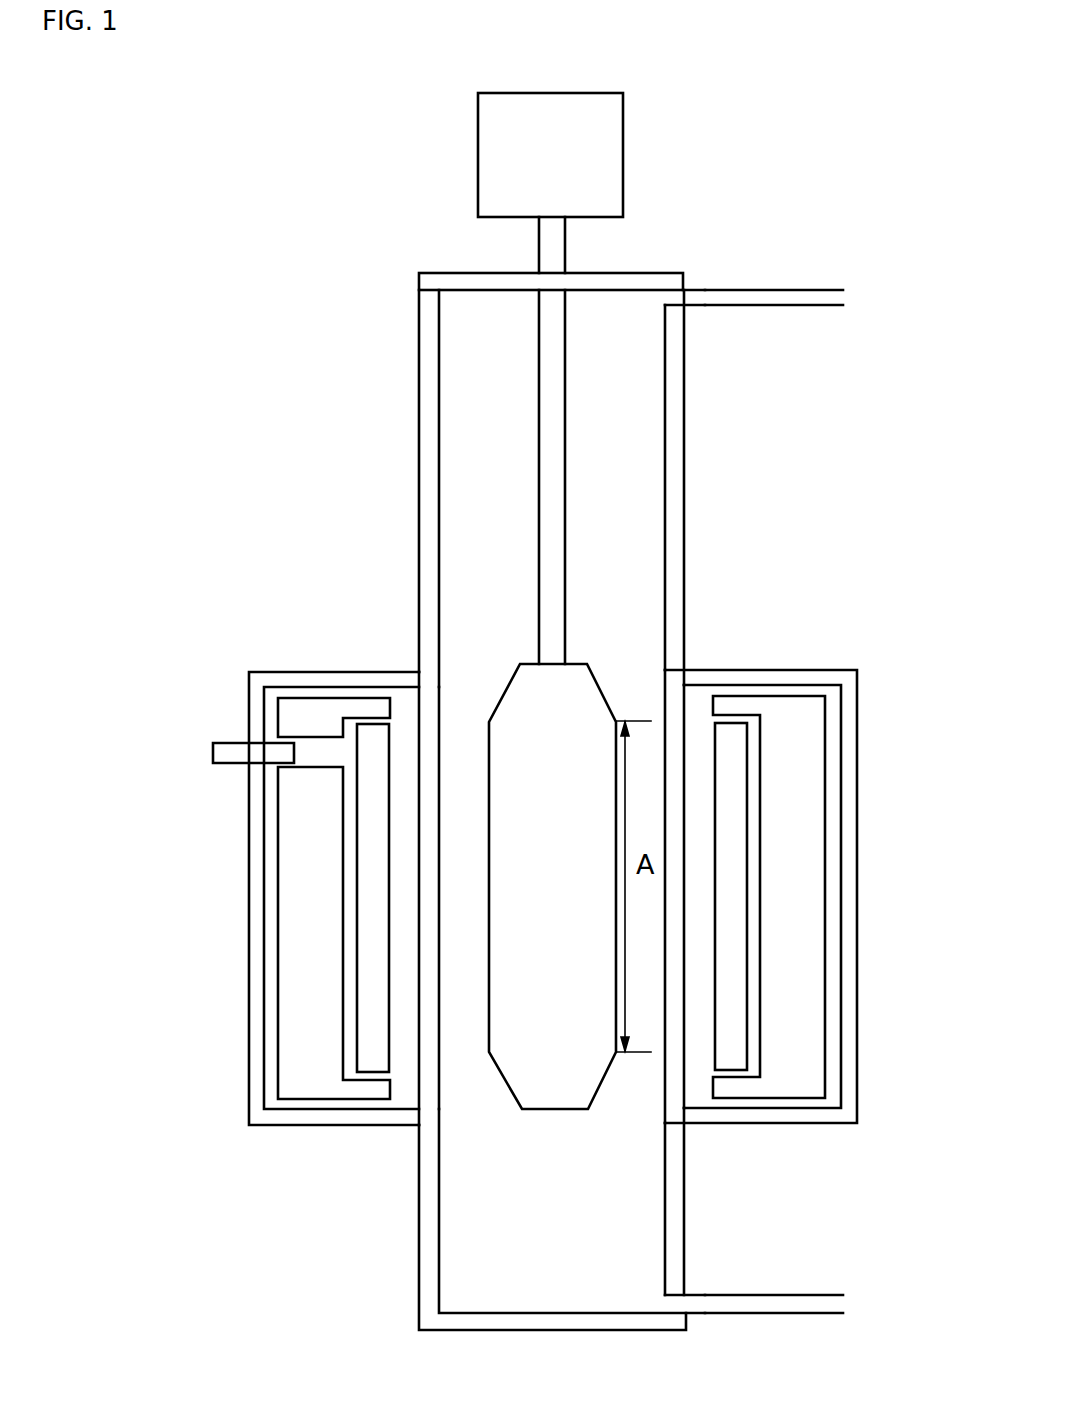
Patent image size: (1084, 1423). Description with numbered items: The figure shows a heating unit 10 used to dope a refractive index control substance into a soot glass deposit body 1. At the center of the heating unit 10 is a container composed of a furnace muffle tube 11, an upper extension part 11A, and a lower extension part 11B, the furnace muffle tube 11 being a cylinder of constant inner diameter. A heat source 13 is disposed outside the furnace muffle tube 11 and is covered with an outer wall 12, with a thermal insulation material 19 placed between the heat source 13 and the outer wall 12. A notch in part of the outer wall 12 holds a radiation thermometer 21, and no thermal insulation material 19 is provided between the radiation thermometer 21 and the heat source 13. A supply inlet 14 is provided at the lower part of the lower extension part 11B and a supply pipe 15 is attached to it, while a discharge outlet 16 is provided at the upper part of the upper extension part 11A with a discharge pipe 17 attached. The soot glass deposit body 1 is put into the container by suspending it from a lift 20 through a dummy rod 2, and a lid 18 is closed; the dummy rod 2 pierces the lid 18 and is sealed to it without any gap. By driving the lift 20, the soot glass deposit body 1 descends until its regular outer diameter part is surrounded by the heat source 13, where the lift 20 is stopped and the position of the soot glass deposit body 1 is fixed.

The soot glass deposit body 1 is at (585, 730).
The dummy rod 2 is at (557, 448).
The heating unit 10 is at (293, 497).
The furnace muffle tube 11 is at (427, 722).
The upper extension part 11A is at (427, 392).
The lower extension part 11B is at (678, 1188).
The outer wall 12 is at (260, 883).
The heat source 13 is at (377, 1000).
The supply inlet 14 is at (682, 1308).
The supply pipe 15 is at (767, 1305).
The discharge outlet 16 is at (683, 298).
The discharge pipe 17 is at (805, 298).
The lid 18 is at (458, 282).
The thermal insulation material 19 is at (313, 722).
The lift 20 is at (585, 162).
The radiation thermometer 21 is at (233, 750).